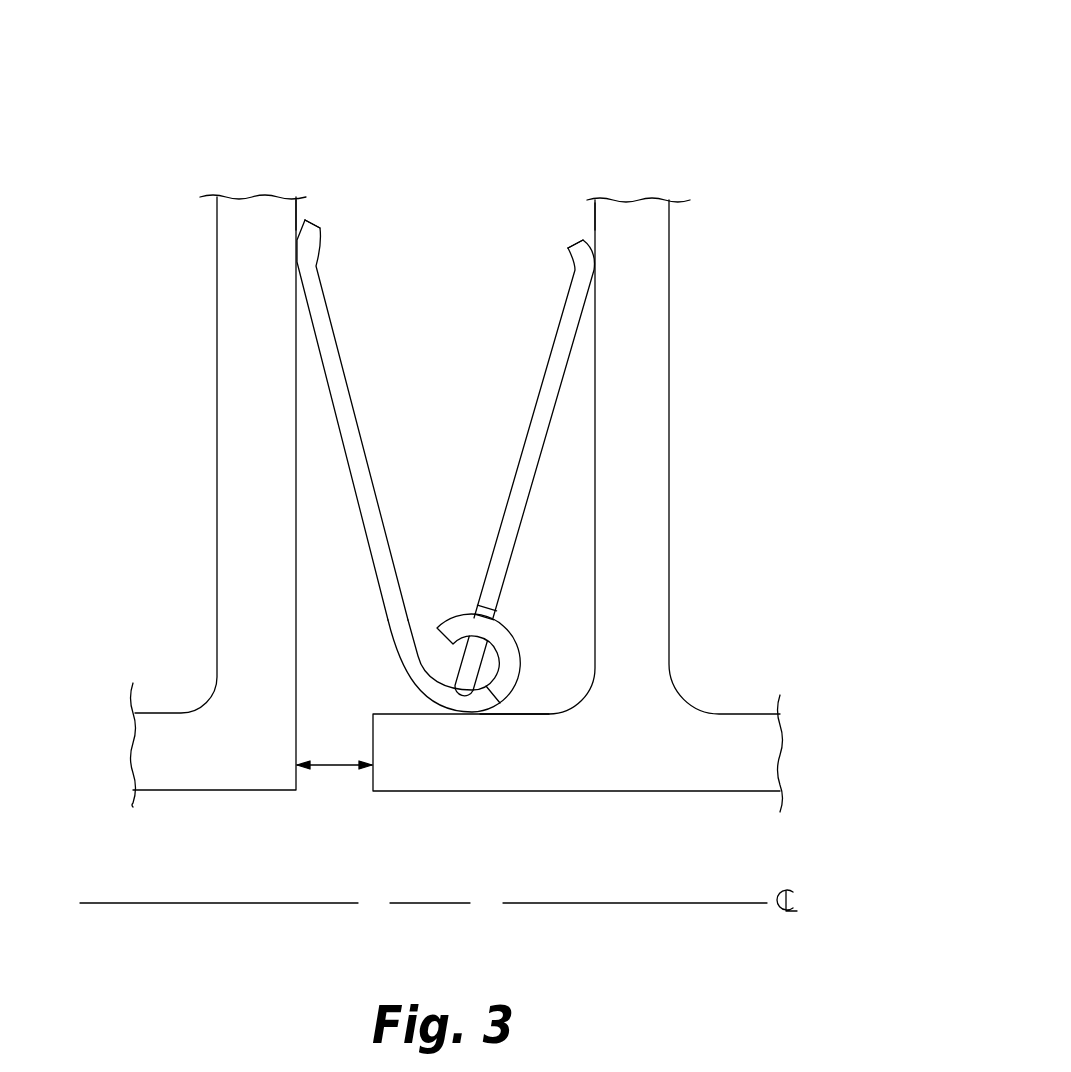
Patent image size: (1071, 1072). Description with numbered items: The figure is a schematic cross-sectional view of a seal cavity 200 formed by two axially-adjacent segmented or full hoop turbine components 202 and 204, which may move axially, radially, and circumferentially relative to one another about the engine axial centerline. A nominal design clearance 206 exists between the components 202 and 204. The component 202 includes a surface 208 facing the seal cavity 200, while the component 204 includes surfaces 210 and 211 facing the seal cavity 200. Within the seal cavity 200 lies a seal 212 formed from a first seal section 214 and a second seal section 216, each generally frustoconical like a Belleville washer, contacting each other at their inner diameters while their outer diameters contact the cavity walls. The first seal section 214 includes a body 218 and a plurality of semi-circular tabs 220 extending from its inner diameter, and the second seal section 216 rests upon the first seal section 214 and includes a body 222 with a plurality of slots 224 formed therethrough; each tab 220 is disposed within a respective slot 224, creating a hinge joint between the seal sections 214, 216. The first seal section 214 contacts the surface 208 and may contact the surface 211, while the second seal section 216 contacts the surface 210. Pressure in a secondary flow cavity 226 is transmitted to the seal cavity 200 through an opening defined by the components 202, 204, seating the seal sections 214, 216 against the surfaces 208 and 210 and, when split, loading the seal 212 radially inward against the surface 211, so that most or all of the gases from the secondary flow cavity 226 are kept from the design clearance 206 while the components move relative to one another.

The seal cavity 200 is at (633, 114).
The turbine component 202 is at (231, 505).
The turbine component 204 is at (578, 505).
The nominal design clearance 206 is at (338, 770).
The surface 208 is at (298, 207).
The surface 210 is at (595, 222).
The surface 211 is at (522, 714).
The seal 212 is at (445, 458).
The first seal section 214 is at (361, 420).
The second seal section 216 is at (511, 468).
The body 218 is at (323, 294).
The semi-circular tab 220 is at (518, 656).
The body 222 is at (566, 303).
The slot 224 is at (463, 600).
The secondary flow cavity 226 is at (462, 85).